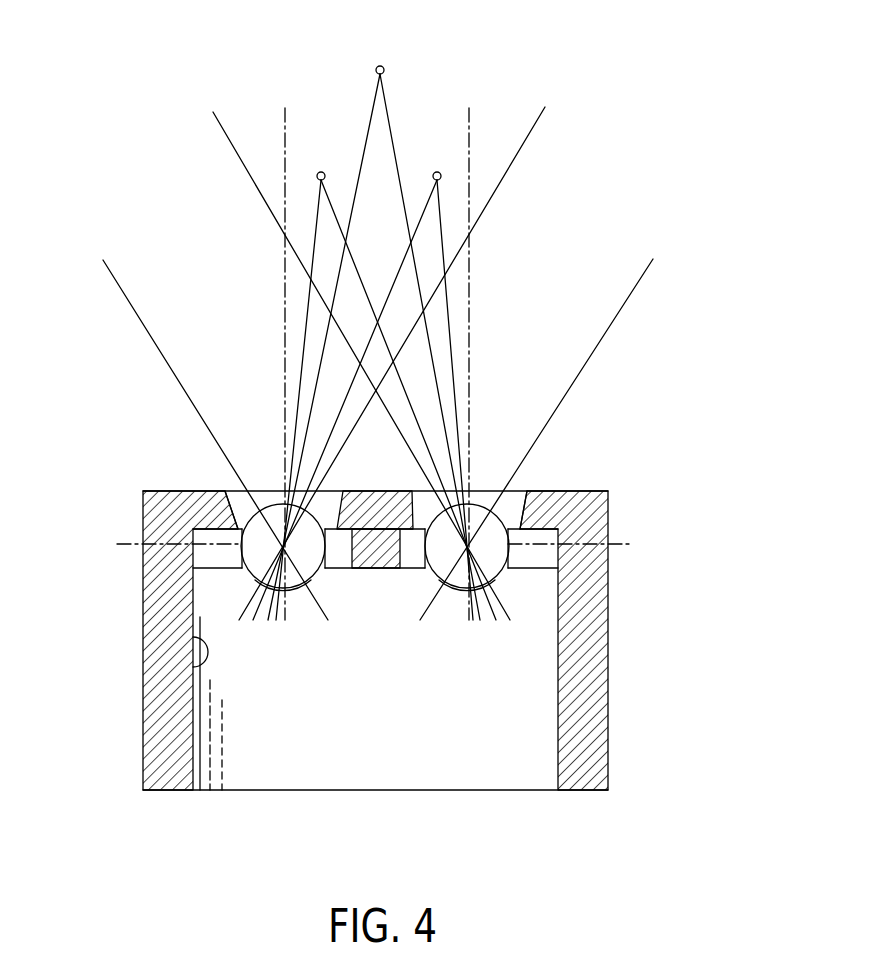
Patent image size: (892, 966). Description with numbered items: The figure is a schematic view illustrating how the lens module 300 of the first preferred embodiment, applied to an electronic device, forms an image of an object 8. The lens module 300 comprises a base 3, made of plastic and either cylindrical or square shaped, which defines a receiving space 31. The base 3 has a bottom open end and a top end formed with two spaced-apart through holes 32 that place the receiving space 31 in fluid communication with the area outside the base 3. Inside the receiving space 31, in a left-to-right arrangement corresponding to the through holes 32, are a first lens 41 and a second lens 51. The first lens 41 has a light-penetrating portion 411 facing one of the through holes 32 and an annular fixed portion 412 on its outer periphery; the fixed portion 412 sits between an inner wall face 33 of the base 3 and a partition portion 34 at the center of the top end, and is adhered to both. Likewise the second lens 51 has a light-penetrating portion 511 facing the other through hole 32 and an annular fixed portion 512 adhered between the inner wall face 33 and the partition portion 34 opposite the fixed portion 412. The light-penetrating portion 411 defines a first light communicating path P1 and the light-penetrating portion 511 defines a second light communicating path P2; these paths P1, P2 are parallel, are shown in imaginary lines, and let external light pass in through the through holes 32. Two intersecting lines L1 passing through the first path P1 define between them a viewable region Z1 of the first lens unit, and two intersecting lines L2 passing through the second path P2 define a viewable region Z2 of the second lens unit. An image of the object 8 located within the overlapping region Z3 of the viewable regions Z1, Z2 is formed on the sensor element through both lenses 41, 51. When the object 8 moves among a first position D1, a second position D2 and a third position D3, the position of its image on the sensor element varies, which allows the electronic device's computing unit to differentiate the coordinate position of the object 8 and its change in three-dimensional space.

The base 3 is at (156, 484).
The lens module 300 is at (601, 481).
The receiving space 31 is at (316, 756).
The through holes 32 is at (235, 490).
The inner wall face 33 is at (192, 677).
The partition portion 34 is at (383, 569).
The first lens 41 is at (226, 580).
The light-penetrating portion 411 is at (313, 581).
The fixed portion 412 is at (205, 562).
The second lens 51 is at (518, 577).
The light-penetrating portion 511 is at (449, 581).
The fixed portion 512 is at (547, 560).
The object 8 is at (386, 69).
The first position D1 is at (322, 160).
The second position D2 is at (438, 160).
The third position D3 is at (381, 56).
The intersecting lines L1 is at (331, 355).
The intersecting lines L2 is at (424, 356).
The first light communicating path P1 is at (187, 364).
The second light communicating path P2 is at (566, 364).
The viewable region Z1 is at (152, 295).
The viewable region Z2 is at (603, 311).
The overlapping region Z3 is at (503, 179).